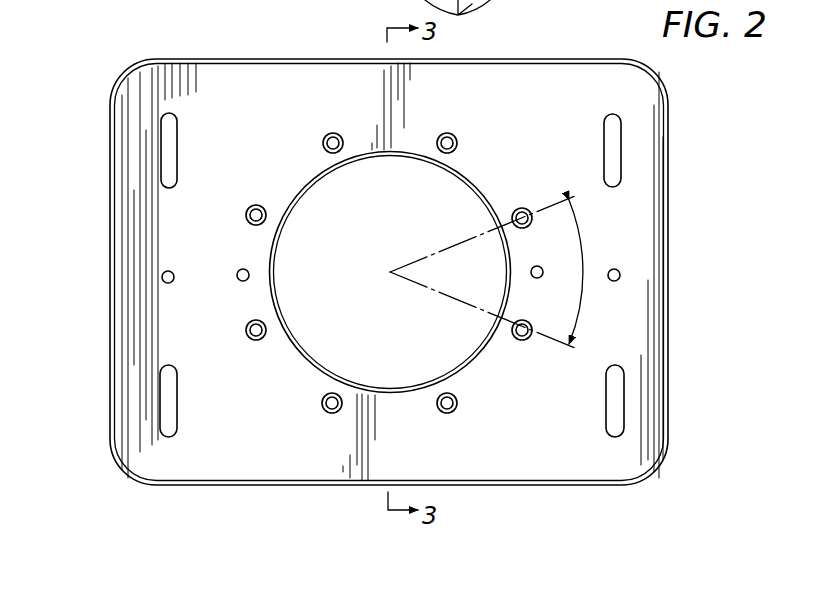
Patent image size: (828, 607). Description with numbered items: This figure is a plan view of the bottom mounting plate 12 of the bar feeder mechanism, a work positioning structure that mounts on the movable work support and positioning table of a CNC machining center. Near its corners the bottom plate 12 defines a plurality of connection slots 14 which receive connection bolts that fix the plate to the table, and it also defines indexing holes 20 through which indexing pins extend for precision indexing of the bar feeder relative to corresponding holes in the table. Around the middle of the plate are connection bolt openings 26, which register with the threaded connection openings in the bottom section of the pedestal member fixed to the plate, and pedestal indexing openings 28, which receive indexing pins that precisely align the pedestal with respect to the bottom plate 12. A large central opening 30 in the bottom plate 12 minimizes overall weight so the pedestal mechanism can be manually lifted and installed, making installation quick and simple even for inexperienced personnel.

The bottom mounting plate 12 is at (200, 70).
The connection slots 14 is at (165, 140).
The indexing holes 20 is at (162, 277).
The connection bolt openings 26 is at (323, 143).
The pedestal indexing openings 28 is at (242, 268).
The central opening 30 is at (330, 345).